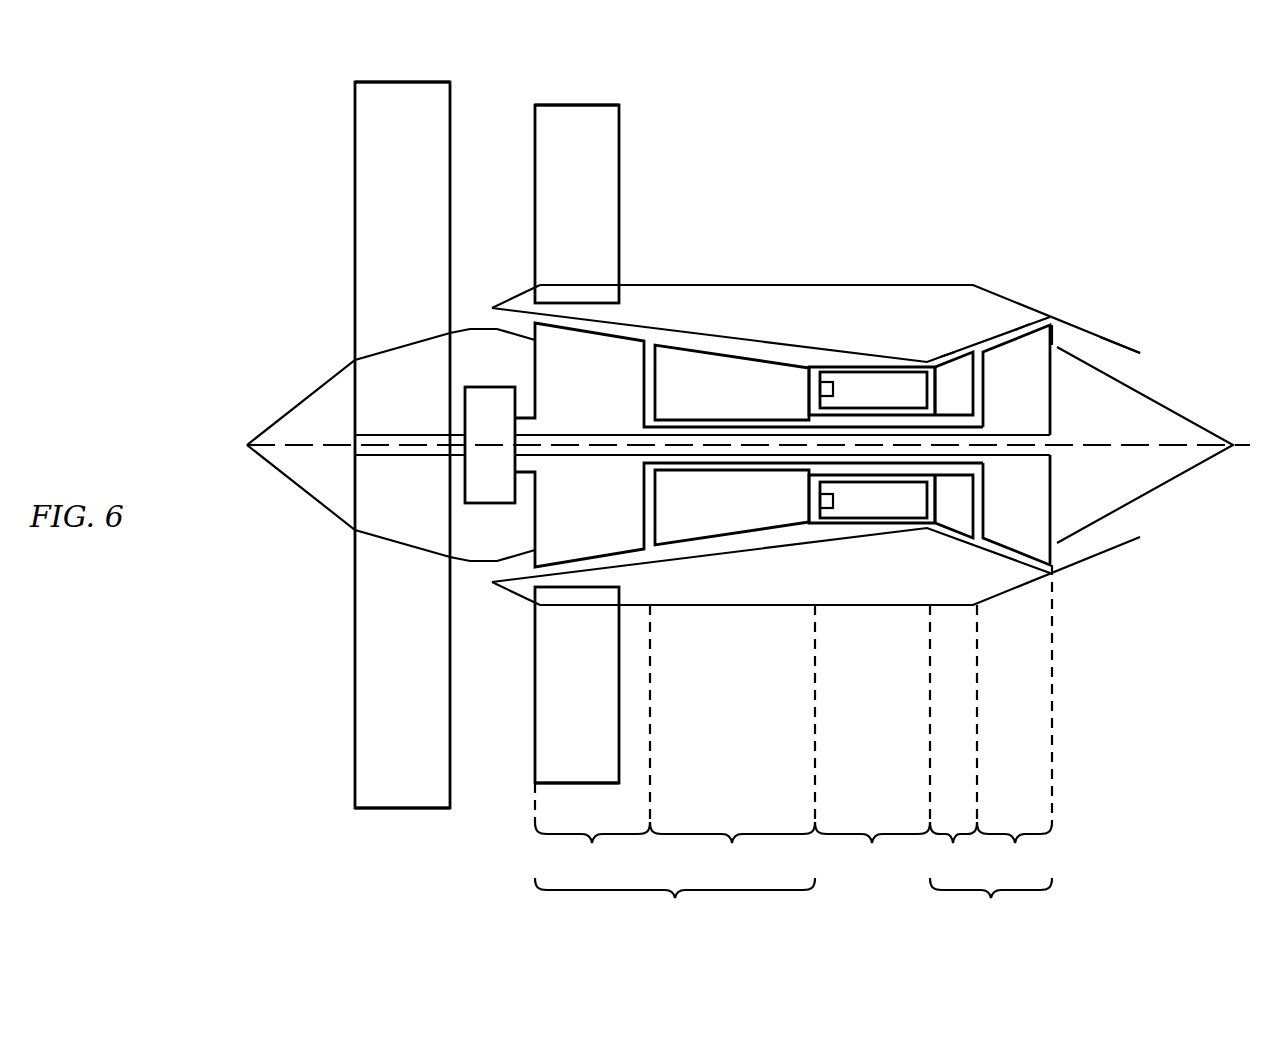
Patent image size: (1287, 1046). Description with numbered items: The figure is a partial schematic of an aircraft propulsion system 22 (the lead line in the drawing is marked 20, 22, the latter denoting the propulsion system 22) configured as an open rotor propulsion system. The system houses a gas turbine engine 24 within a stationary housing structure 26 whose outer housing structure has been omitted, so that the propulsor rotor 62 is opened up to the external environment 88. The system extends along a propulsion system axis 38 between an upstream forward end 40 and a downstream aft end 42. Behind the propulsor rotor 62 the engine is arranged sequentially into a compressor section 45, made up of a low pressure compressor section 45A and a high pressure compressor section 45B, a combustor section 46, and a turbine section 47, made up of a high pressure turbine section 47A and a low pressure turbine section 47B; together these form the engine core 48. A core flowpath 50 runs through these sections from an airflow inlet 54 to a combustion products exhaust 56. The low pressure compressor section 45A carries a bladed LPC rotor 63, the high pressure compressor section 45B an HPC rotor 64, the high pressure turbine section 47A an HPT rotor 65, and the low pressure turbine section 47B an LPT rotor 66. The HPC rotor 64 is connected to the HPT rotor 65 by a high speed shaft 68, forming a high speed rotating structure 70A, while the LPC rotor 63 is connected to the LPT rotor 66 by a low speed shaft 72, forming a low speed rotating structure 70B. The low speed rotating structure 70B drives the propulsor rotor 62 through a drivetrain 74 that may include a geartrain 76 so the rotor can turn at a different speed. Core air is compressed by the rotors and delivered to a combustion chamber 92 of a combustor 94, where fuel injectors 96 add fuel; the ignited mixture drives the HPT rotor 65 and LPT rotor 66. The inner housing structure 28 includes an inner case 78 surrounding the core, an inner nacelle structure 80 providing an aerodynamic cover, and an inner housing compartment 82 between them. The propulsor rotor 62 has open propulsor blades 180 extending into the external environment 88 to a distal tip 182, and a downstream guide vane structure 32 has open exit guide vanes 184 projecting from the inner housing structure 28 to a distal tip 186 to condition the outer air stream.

The gas turbine engine 20 is at (188, 101).
The aircraft propulsion system 22 is at (735, 635).
The gas turbine engine 24 is at (488, 896).
The housing structure 26 is at (735, 264).
The inner housing structure 28 is at (717, 421).
The guide vane structure 32 is at (643, 120).
The propulsion system axis 38 is at (230, 452).
The forward end 40 is at (244, 440).
The aft end 42 is at (1236, 444).
The compressor section 45 is at (675, 768).
The low pressure compressor section 45A is at (592, 740).
The high pressure compressor section 45B is at (732, 740).
The combustor section 46 is at (872, 740).
The turbine section 47 is at (991, 748).
The high pressure turbine section 47A is at (954, 740).
The low pressure turbine section 47B is at (1014, 720).
The core 48 is at (826, 920).
The core flowpath 50 is at (1078, 338).
The airflow inlet 54 is at (488, 318).
The combustion products exhaust 56 is at (1140, 370).
The propulsor rotor 62 is at (334, 118).
The low pressure compressor rotor 63 is at (573, 394).
The high pressure compressor rotor 64 is at (698, 394).
The high pressure turbine rotor 65 is at (940, 394).
The low pressure turbine rotor 66 is at (1006, 389).
The high speed shaft 68 is at (878, 413).
The high speed rotating structure 70A is at (955, 349).
The low speed rotating structure 70B is at (1026, 324).
The low speed shaft 72 is at (852, 428).
The drivetrain 74 is at (486, 378).
The geartrain 76 is at (478, 451).
The inner case 78 is at (708, 342).
The inner nacelle structure 80 is at (830, 285).
The inner housing compartment 82 is at (858, 316).
The external environment 88 is at (148, 252).
The combustion chamber 92 is at (871, 511).
The combustor 94 is at (895, 520).
The fuel injectors 96 is at (822, 512).
The propulsor blades 180 is at (389, 224).
The distal tip 182 is at (405, 82).
The exit guide vanes 184 is at (564, 262).
The distal tip 186 is at (565, 105).